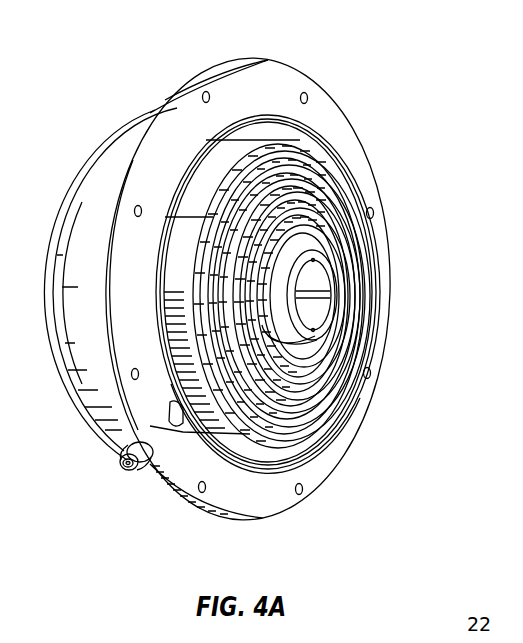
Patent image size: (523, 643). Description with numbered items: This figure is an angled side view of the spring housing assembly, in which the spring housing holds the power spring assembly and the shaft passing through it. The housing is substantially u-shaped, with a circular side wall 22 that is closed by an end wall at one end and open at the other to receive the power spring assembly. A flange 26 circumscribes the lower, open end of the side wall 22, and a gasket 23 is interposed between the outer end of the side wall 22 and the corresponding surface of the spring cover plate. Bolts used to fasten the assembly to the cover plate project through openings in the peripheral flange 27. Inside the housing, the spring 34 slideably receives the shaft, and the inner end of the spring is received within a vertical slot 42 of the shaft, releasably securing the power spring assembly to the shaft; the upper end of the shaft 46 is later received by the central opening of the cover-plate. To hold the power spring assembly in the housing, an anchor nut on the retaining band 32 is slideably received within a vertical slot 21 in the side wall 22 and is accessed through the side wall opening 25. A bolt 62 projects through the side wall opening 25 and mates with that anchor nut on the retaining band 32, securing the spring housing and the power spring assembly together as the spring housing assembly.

The circular side wall 22 is at (113, 160).
The flange 26 is at (254, 75).
The peripheral flange 27 is at (311, 97).
The retaining band 32 is at (207, 157).
The spring 34 is at (363, 291).
The upper end of the shaft 46 is at (287, 262).
The vertical slot 42 is at (317, 323).
The gasket 23 is at (268, 472).
The vertical slot 21 is at (175, 420).
The bolt 62 is at (121, 466).
The side wall opening 25 is at (157, 463).